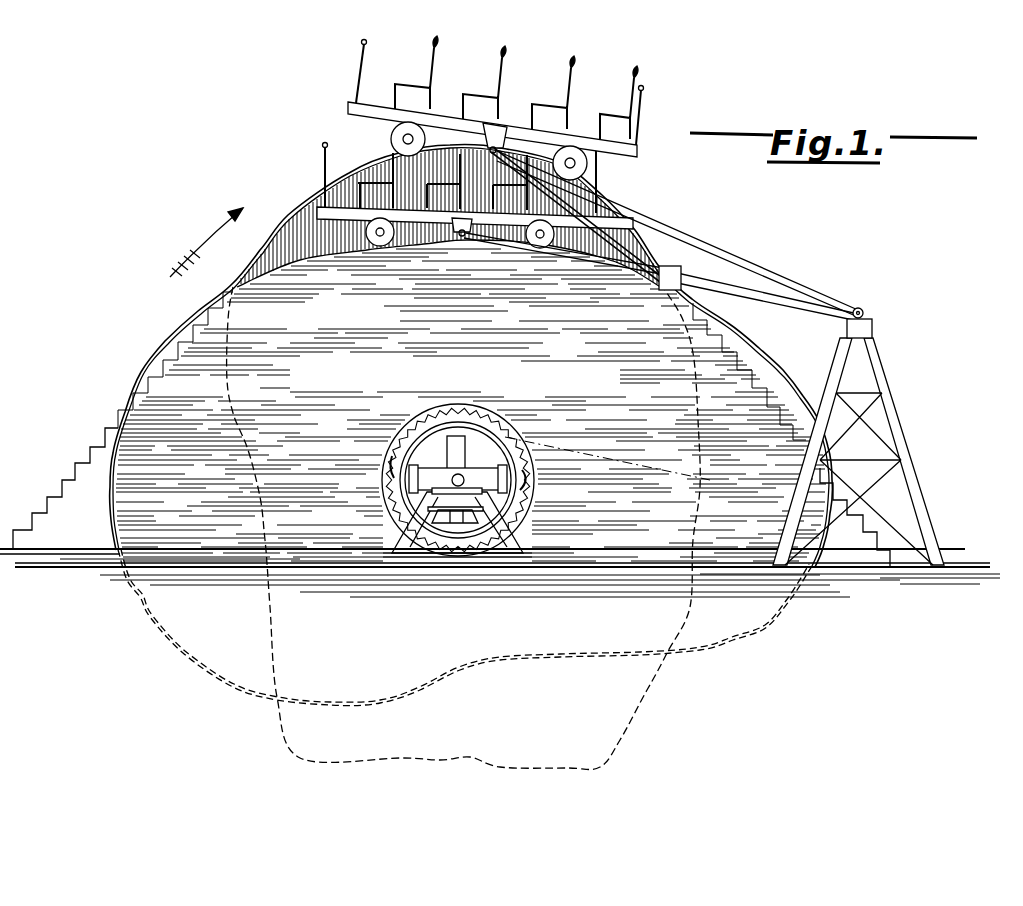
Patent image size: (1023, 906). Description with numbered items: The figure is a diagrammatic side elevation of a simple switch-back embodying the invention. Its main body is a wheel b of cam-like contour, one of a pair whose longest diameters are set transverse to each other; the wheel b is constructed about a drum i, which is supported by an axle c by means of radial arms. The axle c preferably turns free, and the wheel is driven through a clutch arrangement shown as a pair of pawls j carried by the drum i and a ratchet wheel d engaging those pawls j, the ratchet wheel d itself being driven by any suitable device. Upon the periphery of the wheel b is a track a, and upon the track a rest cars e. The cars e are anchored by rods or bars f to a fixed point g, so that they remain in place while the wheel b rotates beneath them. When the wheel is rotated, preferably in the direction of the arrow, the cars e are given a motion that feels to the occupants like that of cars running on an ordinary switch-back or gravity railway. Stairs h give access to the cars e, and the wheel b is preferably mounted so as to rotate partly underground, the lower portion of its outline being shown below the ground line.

The track a is at (372, 166).
The wheel b is at (294, 232).
The axle c is at (455, 476).
The ratchet wheel d is at (478, 428).
The car e is at (520, 134).
The rod or bar f is at (752, 264).
The fixed point g is at (866, 313).
The stairs h is at (72, 480).
The drum i is at (498, 470).
The pawl j is at (392, 456).